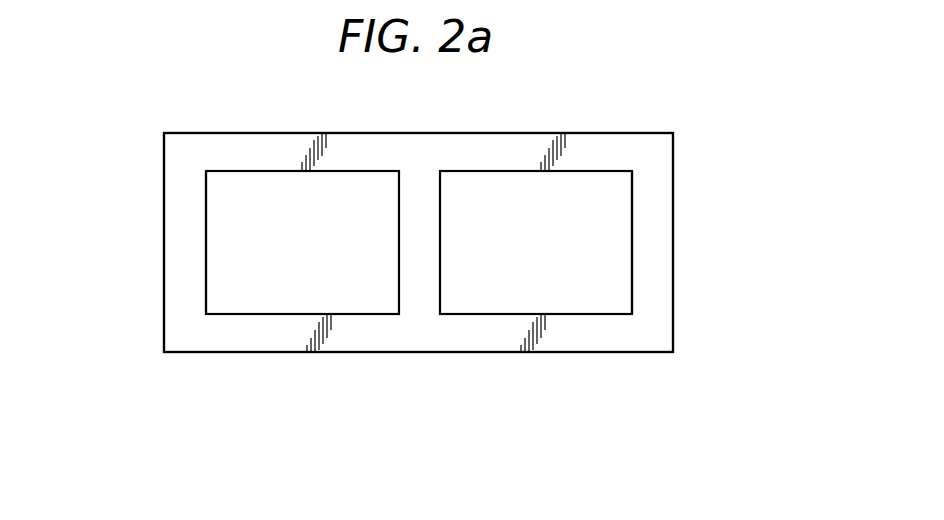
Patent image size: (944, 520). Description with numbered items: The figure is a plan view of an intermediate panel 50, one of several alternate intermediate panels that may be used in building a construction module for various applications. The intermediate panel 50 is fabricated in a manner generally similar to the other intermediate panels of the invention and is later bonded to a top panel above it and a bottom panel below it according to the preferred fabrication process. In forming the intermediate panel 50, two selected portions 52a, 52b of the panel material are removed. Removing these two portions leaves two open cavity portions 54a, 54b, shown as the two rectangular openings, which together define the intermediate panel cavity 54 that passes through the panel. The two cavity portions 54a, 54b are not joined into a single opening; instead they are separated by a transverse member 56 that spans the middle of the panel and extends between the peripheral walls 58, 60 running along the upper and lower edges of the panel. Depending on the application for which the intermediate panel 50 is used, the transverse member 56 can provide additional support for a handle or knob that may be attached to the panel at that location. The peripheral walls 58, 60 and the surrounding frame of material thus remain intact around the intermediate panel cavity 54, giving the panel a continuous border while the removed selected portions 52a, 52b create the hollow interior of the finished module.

The intermediate panel 50 is at (674, 243).
The selected portion 52a is at (583, 302).
The selected portion 52b is at (243, 297).
The intermediate panel cavity 54 is at (473, 183).
The cavity portion 54a is at (577, 233).
The cavity portion 54b is at (270, 240).
The transverse member 56 is at (410, 183).
The peripheral wall 58 is at (457, 338).
The peripheral wall 60 is at (232, 143).